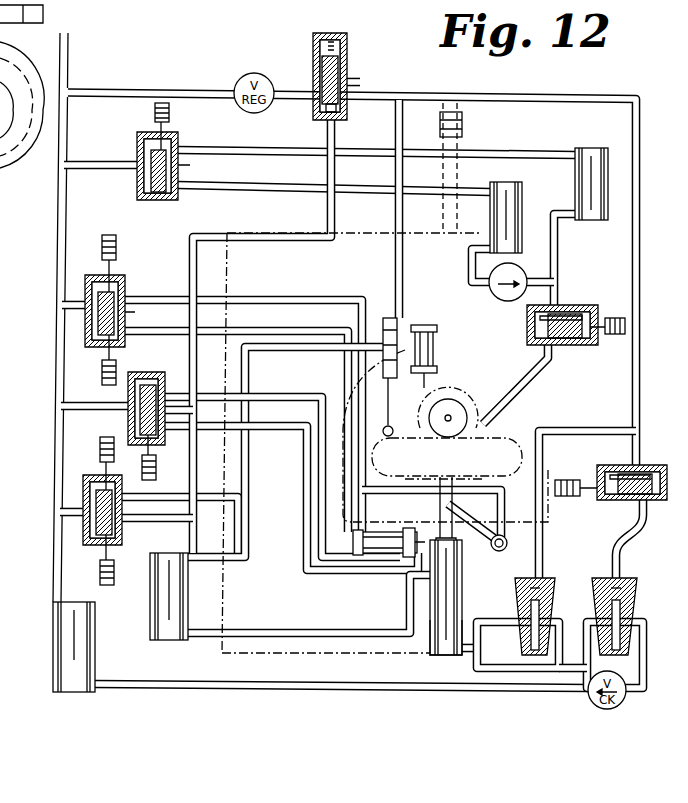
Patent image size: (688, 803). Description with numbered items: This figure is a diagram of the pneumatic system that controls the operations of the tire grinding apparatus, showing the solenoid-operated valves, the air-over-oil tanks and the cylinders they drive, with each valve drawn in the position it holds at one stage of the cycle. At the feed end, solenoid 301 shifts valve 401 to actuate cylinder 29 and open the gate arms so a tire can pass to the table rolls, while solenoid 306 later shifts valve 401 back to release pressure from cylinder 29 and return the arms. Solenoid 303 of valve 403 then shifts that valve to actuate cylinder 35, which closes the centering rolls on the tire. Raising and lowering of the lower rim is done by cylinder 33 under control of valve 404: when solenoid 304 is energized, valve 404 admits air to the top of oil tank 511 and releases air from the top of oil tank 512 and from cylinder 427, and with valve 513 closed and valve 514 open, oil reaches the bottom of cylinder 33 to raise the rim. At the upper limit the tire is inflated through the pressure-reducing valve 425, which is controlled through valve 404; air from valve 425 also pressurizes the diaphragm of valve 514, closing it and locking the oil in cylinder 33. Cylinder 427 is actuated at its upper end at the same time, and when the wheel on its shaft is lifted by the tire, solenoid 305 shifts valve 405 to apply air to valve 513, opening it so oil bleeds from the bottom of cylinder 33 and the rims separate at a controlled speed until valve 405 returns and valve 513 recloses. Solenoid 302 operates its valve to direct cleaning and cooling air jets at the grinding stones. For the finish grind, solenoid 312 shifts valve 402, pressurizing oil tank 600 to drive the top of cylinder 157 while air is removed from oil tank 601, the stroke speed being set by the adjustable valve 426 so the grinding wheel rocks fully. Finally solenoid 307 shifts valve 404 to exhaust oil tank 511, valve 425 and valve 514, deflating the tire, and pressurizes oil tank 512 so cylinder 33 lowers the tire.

The cylinder 29 is at (497, 553).
The cylinder 33 is at (450, 655).
The cylinder 35 is at (390, 560).
The cylinder 157 is at (430, 347).
The solenoid 301 is at (116, 245).
The solenoid 302 is at (612, 340).
The solenoid 303 is at (157, 468).
The solenoid 304 is at (100, 448).
The solenoid 305 is at (568, 480).
The solenoid 306 is at (102, 374).
The solenoid 307 is at (100, 573).
The solenoid 312 is at (170, 112).
The valve 401 is at (118, 280).
The valve 402 is at (137, 147).
The valve 403 is at (152, 372).
The valve 404 is at (83, 520).
The valve 405 is at (642, 465).
The pressure-reducing valve 425 is at (348, 66).
The adjustable valve 426 is at (527, 285).
The cylinder 427 is at (393, 318).
The oil tank 511 is at (60, 640).
The oil tank 512 is at (160, 635).
The valve 513 is at (622, 588).
The valve 514 is at (545, 592).
The oil tank 600 is at (510, 195).
The oil tank 601 is at (596, 150).